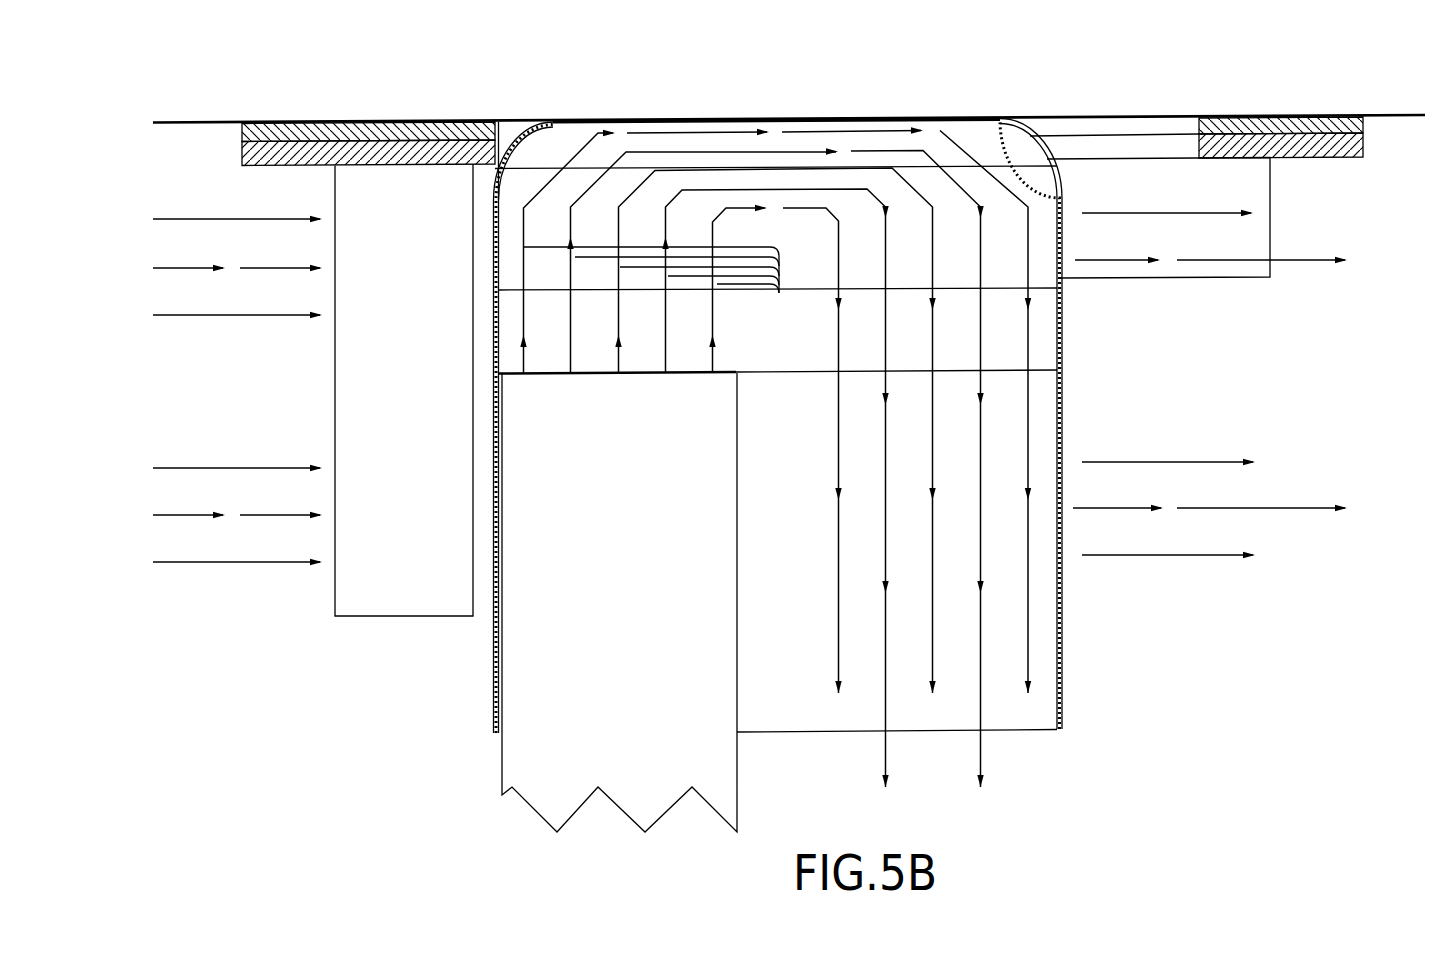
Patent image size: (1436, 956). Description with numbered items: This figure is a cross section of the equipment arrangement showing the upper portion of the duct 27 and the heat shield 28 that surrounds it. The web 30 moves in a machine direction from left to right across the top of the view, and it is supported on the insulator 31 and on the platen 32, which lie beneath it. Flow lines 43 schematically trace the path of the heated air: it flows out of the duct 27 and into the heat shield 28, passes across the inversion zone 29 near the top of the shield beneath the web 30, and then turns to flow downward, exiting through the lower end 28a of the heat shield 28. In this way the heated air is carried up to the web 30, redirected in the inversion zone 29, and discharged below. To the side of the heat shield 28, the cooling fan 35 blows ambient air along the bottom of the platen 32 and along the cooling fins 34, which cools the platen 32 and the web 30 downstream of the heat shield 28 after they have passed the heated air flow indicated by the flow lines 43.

The duct 27 is at (620, 762).
The heat shield 28 is at (1063, 385).
The lower end of the heat shield 28a is at (1024, 730).
The inversion zone 29 is at (774, 118).
The web 30 is at (508, 121).
The insulator 31 is at (1325, 116).
The platen 32 is at (1232, 143).
The cooling fins 34 is at (1270, 203).
The cooling fan 35 is at (408, 391).
The flow lines 43 is at (779, 293).